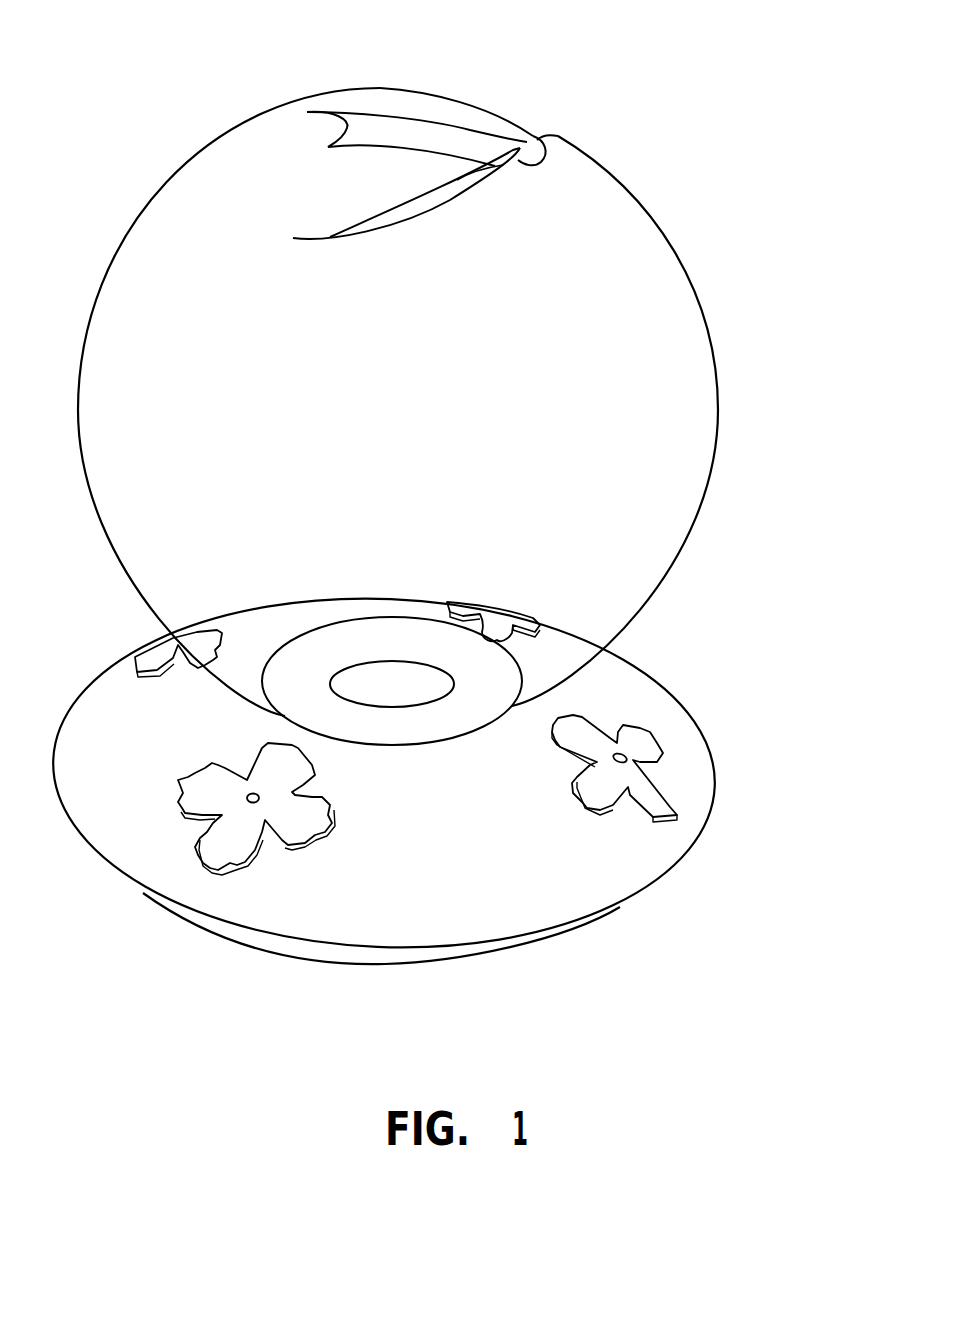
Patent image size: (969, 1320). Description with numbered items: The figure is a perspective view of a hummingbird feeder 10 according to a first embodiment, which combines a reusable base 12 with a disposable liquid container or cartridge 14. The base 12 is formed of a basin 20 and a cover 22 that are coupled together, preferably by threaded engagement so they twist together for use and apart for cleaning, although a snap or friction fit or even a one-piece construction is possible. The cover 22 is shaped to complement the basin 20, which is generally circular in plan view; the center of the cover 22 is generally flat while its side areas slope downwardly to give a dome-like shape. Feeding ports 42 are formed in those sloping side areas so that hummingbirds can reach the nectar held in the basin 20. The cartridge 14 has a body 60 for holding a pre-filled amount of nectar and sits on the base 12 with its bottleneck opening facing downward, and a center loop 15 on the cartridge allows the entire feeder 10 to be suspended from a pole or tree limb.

The hummingbird feeder 10 is at (753, 117).
The base 12 is at (416, 830).
The cartridge 14 is at (685, 342).
The center loop 15 is at (463, 125).
The basin 20 is at (402, 953).
The cover 22 is at (470, 854).
The feeding ports 42 is at (672, 793).
The body 60 is at (342, 471).